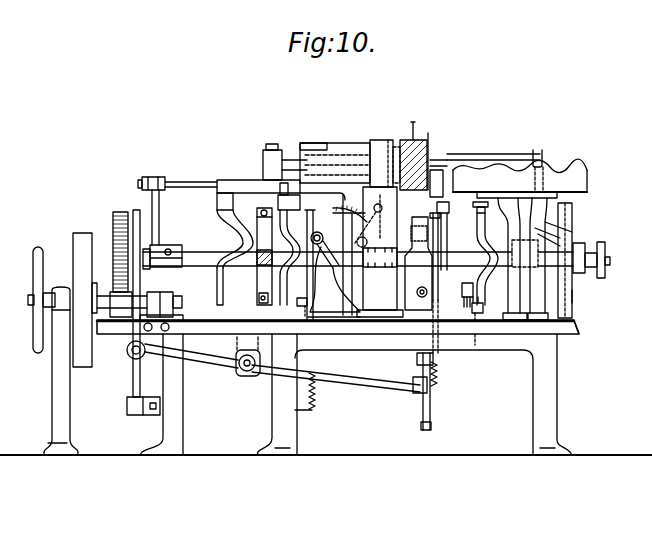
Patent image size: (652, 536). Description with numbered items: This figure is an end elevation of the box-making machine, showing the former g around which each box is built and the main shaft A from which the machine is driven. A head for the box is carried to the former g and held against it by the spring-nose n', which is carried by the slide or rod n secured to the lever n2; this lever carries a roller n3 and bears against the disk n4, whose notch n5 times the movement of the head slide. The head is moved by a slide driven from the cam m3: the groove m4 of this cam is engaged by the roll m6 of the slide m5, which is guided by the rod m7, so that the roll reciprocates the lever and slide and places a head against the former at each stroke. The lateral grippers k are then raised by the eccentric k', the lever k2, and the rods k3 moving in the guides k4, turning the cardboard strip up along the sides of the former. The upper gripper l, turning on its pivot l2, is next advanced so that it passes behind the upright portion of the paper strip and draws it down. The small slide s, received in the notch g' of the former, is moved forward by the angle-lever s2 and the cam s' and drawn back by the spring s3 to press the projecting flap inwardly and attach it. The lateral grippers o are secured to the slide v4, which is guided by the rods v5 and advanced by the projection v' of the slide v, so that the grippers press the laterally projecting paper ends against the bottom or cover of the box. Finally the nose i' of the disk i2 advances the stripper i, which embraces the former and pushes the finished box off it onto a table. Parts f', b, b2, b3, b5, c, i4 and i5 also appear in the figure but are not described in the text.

The guide rods v5 is at (178, 182).
The eccentric k' is at (182, 303).
The main shaft A is at (184, 250).
The slide v4 is at (230, 181).
The lateral grippers o is at (284, 158).
The projection v' is at (235, 230).
The slide v is at (209, 286).
The column f' is at (254, 256).
The slide or stripper i is at (294, 196).
The disk i2 is at (286, 257).
The nose i' is at (291, 257).
The upper gripper l is at (312, 210).
The cam s' is at (334, 271).
The spring s3 is at (348, 212).
The angle-lever s2 is at (371, 225).
The notch g' is at (335, 156).
The small slide s is at (357, 136).
The former g is at (414, 150).
The spring-nose n' is at (445, 169).
The slide or rod n is at (517, 169).
The lever n2 is at (543, 160).
The disk n4 is at (532, 316).
The roller n3 is at (563, 258).
The notch n5 is at (567, 227).
The roll m6 is at (590, 247).
The slide m5 is at (612, 253).
The rod m7 is at (578, 303).
The cam groove m4 is at (573, 324).
The cam m3 is at (573, 337).
The lateral grippers k is at (418, 263).
The guides k4 is at (416, 358).
The curved arm b is at (487, 213).
The arm side b2 is at (480, 257).
The arm side b3 is at (485, 243).
The block b5 is at (462, 297).
The rod c is at (473, 338).
The pivot l2 is at (466, 308).
The lever k2 is at (347, 380).
The rods k3 is at (420, 404).
The block i4 is at (297, 303).
The pin i5 is at (310, 313).